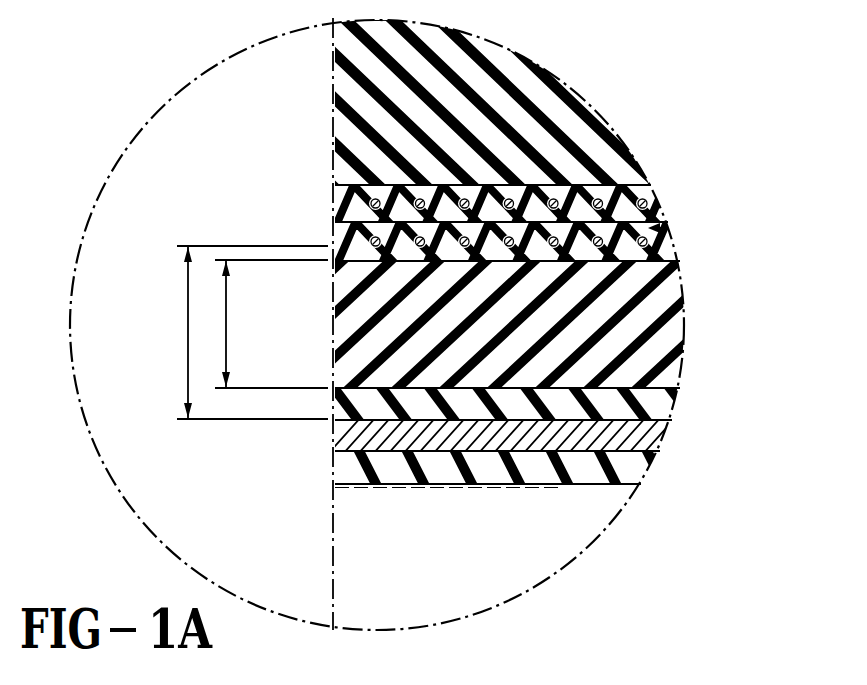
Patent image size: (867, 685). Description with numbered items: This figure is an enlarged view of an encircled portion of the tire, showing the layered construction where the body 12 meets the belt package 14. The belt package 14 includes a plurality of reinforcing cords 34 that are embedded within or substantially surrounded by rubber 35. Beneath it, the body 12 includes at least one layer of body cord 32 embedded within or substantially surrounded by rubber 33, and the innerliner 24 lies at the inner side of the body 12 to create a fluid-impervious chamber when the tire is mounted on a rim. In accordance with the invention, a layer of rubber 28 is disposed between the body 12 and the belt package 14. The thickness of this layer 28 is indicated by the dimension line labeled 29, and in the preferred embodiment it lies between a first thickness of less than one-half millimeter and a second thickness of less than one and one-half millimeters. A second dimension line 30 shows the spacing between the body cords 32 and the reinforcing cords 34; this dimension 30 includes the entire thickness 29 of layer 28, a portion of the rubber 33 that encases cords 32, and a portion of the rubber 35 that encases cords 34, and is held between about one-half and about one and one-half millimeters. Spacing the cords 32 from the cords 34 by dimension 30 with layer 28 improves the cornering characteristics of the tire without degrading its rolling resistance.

The body 12 is at (485, 496).
The belt package 14 is at (326, 188).
The innerliner 24 is at (518, 489).
The layer of rubber 28 is at (338, 302).
The thickness 29 is at (227, 339).
The dimension line 30 is at (187, 339).
The body cord 32 is at (652, 442).
The rubber 33 is at (652, 408).
The reinforcing cords 34 is at (647, 207).
The rubber 35 is at (336, 228).